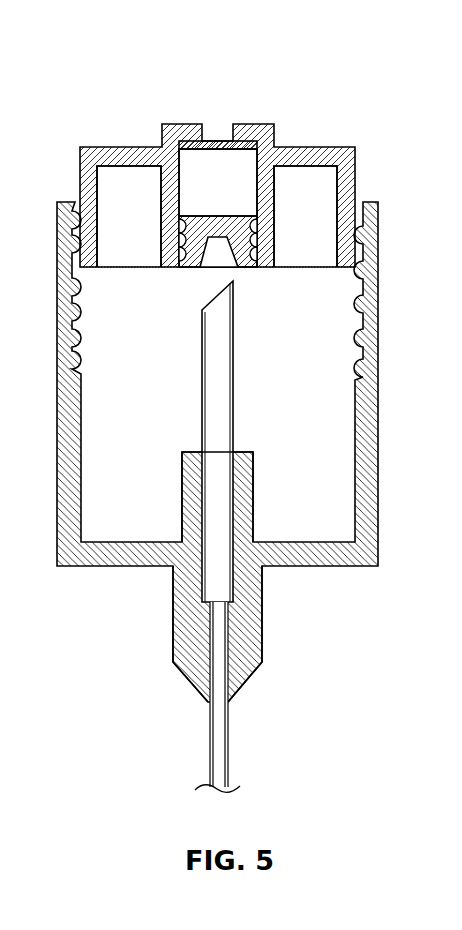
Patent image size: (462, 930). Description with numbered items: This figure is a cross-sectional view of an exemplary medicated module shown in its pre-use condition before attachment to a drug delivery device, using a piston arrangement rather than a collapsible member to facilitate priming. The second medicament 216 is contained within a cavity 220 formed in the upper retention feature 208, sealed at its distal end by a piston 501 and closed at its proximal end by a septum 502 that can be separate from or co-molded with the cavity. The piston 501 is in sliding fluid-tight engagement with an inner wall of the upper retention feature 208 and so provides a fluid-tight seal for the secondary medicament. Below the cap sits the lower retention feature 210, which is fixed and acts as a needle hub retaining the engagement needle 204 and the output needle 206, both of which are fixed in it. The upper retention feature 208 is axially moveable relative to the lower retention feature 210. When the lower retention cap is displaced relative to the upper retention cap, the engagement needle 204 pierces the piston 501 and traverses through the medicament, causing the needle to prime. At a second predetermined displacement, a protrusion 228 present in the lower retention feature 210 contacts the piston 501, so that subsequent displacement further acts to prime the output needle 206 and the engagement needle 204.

The upper retention feature 208 is at (116, 145).
The second medicament 216 is at (190, 178).
The septum 502 is at (210, 143).
The cavity 220 is at (262, 211).
The piston 501 is at (245, 260).
The engagement needle 204 is at (235, 387).
The protrusion 228 is at (247, 478).
The lower retention feature 210 is at (253, 645).
The output needle 206 is at (230, 758).